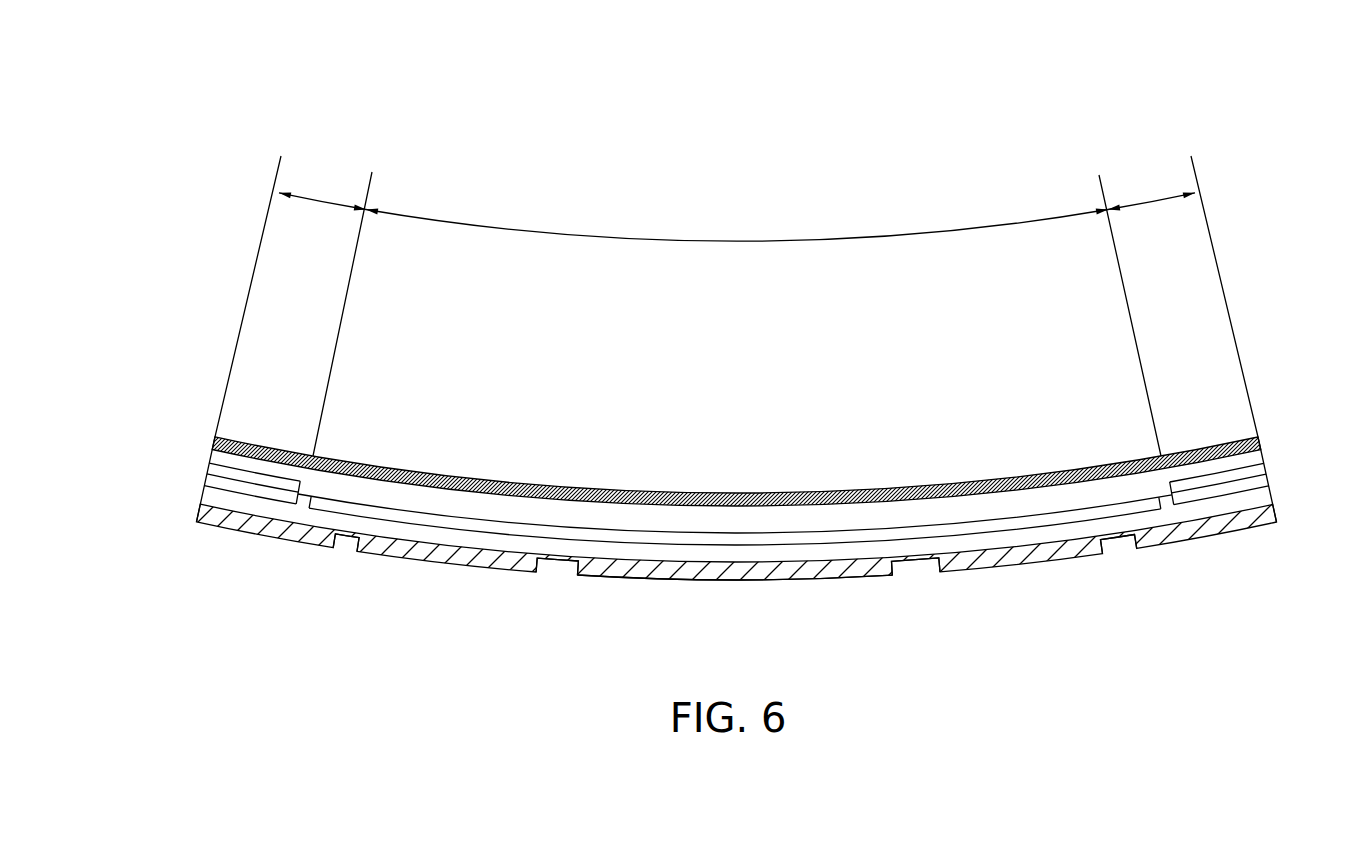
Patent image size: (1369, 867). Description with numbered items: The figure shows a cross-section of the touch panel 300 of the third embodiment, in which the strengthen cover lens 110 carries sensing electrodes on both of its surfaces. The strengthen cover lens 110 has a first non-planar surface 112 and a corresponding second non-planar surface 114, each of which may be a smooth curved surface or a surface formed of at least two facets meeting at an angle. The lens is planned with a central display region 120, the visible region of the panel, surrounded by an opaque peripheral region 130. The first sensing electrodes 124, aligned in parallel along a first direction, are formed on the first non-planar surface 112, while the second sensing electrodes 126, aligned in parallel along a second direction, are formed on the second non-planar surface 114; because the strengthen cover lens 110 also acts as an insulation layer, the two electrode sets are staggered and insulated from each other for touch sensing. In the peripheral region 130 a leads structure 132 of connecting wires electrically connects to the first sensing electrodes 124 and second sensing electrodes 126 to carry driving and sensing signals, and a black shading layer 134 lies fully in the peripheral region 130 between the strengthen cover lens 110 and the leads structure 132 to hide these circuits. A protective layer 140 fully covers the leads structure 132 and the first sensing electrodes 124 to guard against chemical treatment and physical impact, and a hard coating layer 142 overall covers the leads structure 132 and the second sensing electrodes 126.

The touch panel 300 is at (1210, 98).
The strengthen cover lens 110 is at (1250, 525).
The first non-planar surface 112 is at (1232, 497).
The second non-planar surface 114 is at (1213, 517).
The display region 120 is at (737, 225).
The first sensing electrodes 124 is at (207, 457).
The second sensing electrodes 126 is at (350, 545).
The peripheral region 130 is at (736, 306).
The leads structure 132 is at (268, 470).
The shading layer 134 is at (207, 489).
The protective layer 140 is at (1110, 463).
The hard coating layer 142 is at (790, 582).